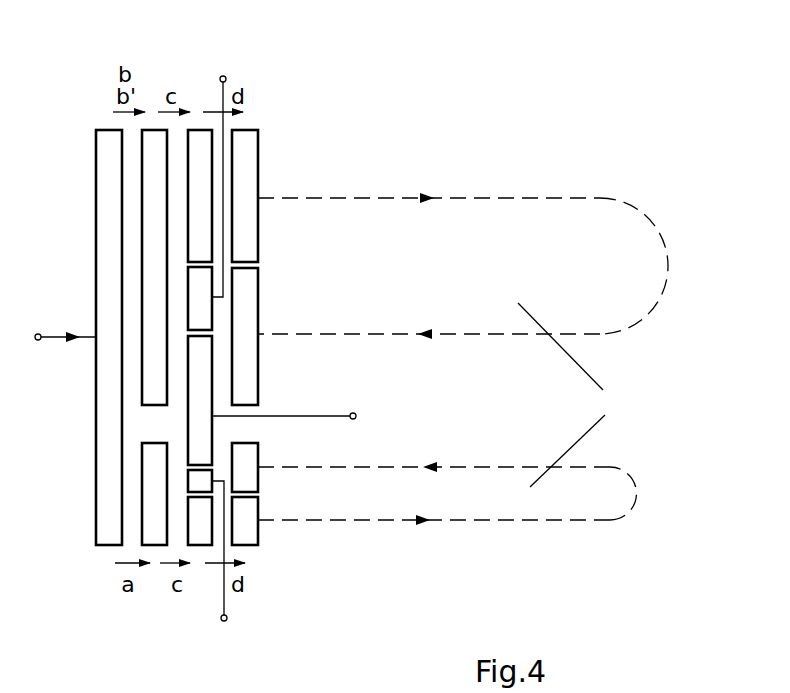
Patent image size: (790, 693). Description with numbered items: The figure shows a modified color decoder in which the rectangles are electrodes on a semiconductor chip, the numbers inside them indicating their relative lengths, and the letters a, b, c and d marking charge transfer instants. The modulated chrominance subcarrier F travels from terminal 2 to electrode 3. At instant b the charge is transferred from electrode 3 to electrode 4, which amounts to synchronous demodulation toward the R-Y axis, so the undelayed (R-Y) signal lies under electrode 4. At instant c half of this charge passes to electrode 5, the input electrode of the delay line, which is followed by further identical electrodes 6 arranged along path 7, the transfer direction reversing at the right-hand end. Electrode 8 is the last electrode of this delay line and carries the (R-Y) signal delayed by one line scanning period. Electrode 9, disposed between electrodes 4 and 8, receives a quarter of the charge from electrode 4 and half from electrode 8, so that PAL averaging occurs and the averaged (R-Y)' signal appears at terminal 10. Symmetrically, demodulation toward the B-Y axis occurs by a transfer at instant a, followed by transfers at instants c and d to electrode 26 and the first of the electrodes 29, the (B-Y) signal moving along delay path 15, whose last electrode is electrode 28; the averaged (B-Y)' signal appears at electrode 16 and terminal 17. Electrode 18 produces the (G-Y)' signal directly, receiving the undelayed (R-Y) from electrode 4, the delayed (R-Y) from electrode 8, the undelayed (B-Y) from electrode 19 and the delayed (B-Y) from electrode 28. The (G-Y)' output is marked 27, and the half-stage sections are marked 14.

The terminal 2 is at (38, 341).
The electrode 3 is at (112, 207).
The electrode 4 is at (157, 150).
The electrode 5 is at (195, 160).
The further identical electrodes 6 is at (240, 168).
The path 7 is at (660, 225).
The electrode 8 is at (242, 295).
The electrode 9 is at (198, 324).
The terminal 10 is at (255, 172).
The half-stage delay segments 14 is at (628, 395).
The delay path 15 is at (644, 480).
The electrode 16 is at (191, 476).
The terminal 17 is at (256, 565).
The electrode 18 is at (200, 423).
The electrode 19 is at (158, 527).
The electrode 26 is at (201, 533).
The (G-Y)' output terminal 27 is at (355, 420).
The last electrode 28 is at (247, 486).
The electrodes 29 is at (247, 535).